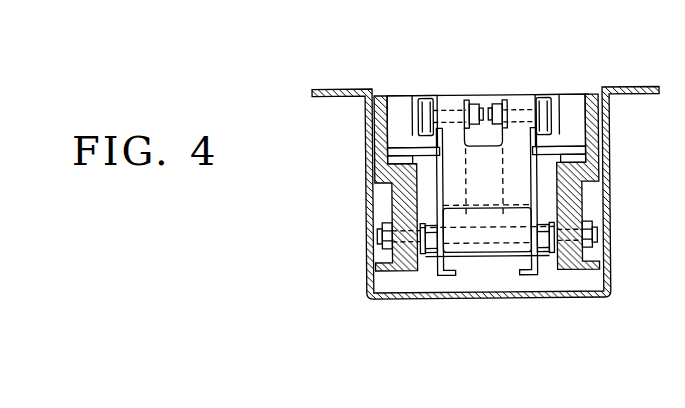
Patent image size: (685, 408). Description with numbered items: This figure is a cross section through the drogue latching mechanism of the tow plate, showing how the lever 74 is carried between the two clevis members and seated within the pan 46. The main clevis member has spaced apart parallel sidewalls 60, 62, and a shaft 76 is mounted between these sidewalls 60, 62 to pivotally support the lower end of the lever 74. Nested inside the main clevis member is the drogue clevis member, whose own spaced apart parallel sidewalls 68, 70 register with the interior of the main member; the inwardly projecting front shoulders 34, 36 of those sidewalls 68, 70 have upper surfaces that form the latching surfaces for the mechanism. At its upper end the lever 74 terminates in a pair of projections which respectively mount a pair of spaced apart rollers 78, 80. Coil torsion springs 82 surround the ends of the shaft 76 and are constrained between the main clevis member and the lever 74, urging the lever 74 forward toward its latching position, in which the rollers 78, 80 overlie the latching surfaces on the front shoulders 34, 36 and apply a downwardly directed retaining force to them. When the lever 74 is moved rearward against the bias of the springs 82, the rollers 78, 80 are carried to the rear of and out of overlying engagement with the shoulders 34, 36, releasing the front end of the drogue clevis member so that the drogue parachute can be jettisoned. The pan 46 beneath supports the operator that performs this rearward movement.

The front shoulder 34 is at (611, 165).
The front shoulder 36 is at (428, 153).
The pan 46 is at (610, 242).
The sidewall 60 is at (580, 211).
The sidewall 62 is at (390, 202).
The sidewall 68 is at (566, 95).
The sidewall 70 is at (400, 95).
The lever 74 is at (527, 188).
The shaft 76 is at (483, 247).
The roller 78 is at (541, 98).
The roller 80 is at (426, 97).
The coil torsion spring 82 is at (440, 268).